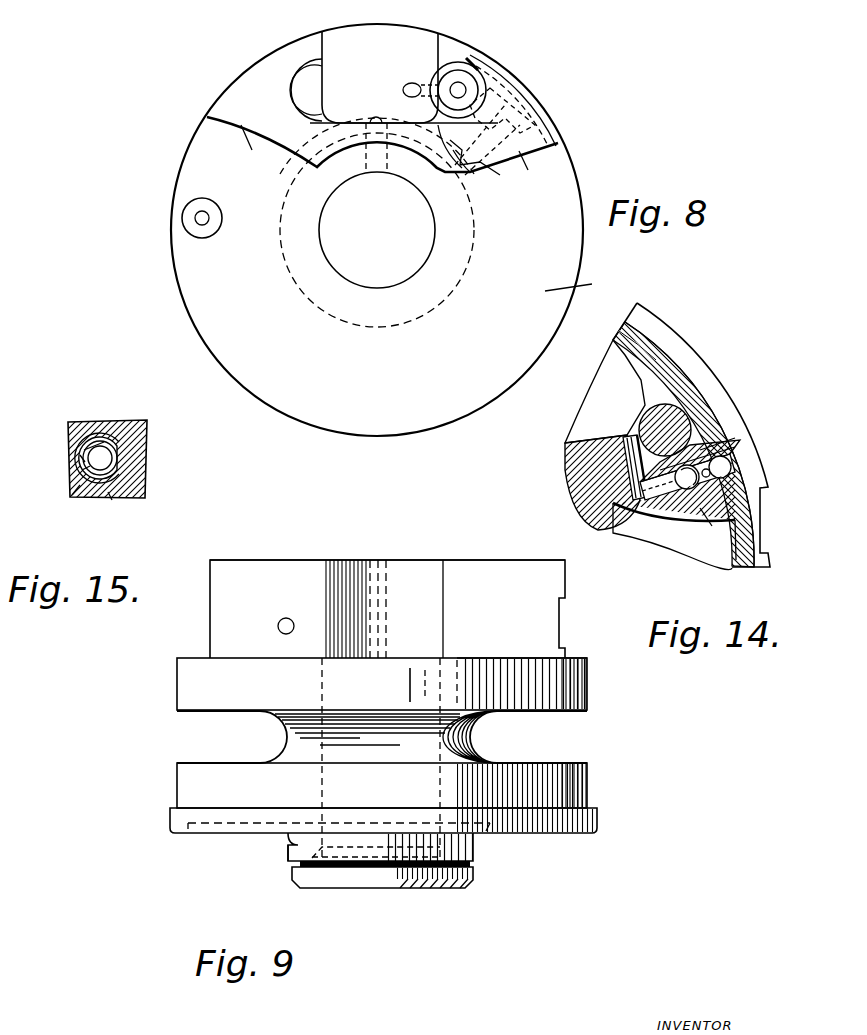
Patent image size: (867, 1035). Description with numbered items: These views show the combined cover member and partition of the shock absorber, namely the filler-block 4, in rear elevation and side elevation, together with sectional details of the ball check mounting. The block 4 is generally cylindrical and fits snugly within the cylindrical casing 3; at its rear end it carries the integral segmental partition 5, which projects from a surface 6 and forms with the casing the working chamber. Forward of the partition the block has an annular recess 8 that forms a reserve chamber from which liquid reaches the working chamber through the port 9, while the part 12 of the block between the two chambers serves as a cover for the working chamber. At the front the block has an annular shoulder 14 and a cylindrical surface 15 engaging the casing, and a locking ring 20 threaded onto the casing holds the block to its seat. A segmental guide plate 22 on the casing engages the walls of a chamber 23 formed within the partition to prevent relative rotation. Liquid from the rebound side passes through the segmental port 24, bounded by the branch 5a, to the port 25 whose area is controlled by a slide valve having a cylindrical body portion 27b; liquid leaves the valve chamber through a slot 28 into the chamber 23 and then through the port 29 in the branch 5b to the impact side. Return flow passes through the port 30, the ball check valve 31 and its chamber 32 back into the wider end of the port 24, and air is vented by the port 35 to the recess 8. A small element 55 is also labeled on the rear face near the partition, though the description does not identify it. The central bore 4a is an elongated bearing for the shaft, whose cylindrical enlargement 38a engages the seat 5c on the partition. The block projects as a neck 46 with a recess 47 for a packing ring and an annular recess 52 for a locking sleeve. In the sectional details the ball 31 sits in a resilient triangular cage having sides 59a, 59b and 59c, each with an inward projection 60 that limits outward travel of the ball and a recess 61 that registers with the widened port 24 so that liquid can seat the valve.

In FIG. 14, the cylindrical casing 3 is at (628, 337).
In FIG. 8, the filler-block 4 is at (377, 230).
In FIG. 9, the filler-block 4 is at (382, 759).
In FIG. 8, the cylindrical bore 4a is at (428, 270).
In FIG. 9, the cylindrical bore 4a is at (320, 780).
In FIG. 8, the segmental partition 5 is at (427, 135).
In FIG. 9, the segmental partition 5 is at (441, 568).
In FIG. 8, the branch of the partition 5a is at (534, 173).
In FIG. 9, the branch of the partition 5a is at (512, 575).
In FIG. 14, the branch of the partition 5a is at (628, 498).
In FIG. 15, the branch of the partition 5a is at (143, 432).
In FIG. 8, the branch of the partition 5b is at (234, 151).
In FIG. 9, the branch of the partition 5b is at (265, 570).
In FIG. 8, the cylindrical seat 5c is at (372, 135).
In FIG. 9, the cylindrical seat 5c is at (395, 570).
In FIG. 8, the surface 6 is at (576, 285).
In FIG. 9, the surface 6 is at (486, 658).
In FIG. 9, the annular recess 8 is at (233, 737).
In FIG. 8, the port 9 is at (207, 226).
In FIG. 9, the part of the block 12 is at (575, 691).
In FIG. 9, the annular shoulder 14 is at (575, 790).
In FIG. 9, the cylindrical surface 15 is at (235, 815).
In FIG. 14, the locking ring 20 is at (707, 363).
In FIG. 14, the segmental guide plate 22 is at (643, 362).
In FIG. 14, the chamber 23 is at (592, 417).
In FIG. 8, the segmental port 24 is at (510, 80).
In FIG. 14, the segmental port 24 is at (713, 455).
In FIG. 8, the port 25 is at (468, 68).
In FIG. 14, the cylindrical body portion 27b is at (650, 414).
In FIG. 8, the slot 28 is at (434, 100).
In FIG. 8, the port 29 is at (290, 142).
In FIG. 9, the port 29 is at (278, 626).
In FIG. 14, the port 30 is at (671, 458).
In FIG. 8, the ball check valve 31 is at (472, 174).
In FIG. 14, the ball check valve 31 is at (685, 497).
In FIG. 15, the ball check valve 31 is at (82, 470).
In FIG. 8, the chamber 32 is at (515, 120).
In FIG. 14, the chamber 32 is at (690, 447).
In FIG. 15, the chamber 32 is at (120, 476).
In FIG. 8, the port 35 is at (408, 86).
In FIG. 14, the cylindrical enlargement 38a is at (588, 488).
In FIG. 9, the neck 46 is at (357, 873).
In FIG. 9, the recess 47 is at (292, 872).
In FIG. 9, the annular recess 52 is at (410, 878).
In FIG. 8, the key 55 is at (377, 117).
In FIG. 14, the side of the cage 59a is at (687, 489).
In FIG. 15, the side of the cage 59a is at (113, 451).
In FIG. 14, the side of the cage 59b is at (713, 447).
In FIG. 15, the side of the cage 59b is at (105, 437).
In FIG. 14, the side of the cage 59c is at (714, 528).
In FIG. 15, the side of the cage 59c is at (72, 495).
In FIG. 14, the projection 60 is at (725, 467).
In FIG. 15, the projection 60 is at (80, 455).
In FIG. 14, the recess 61 is at (710, 473).